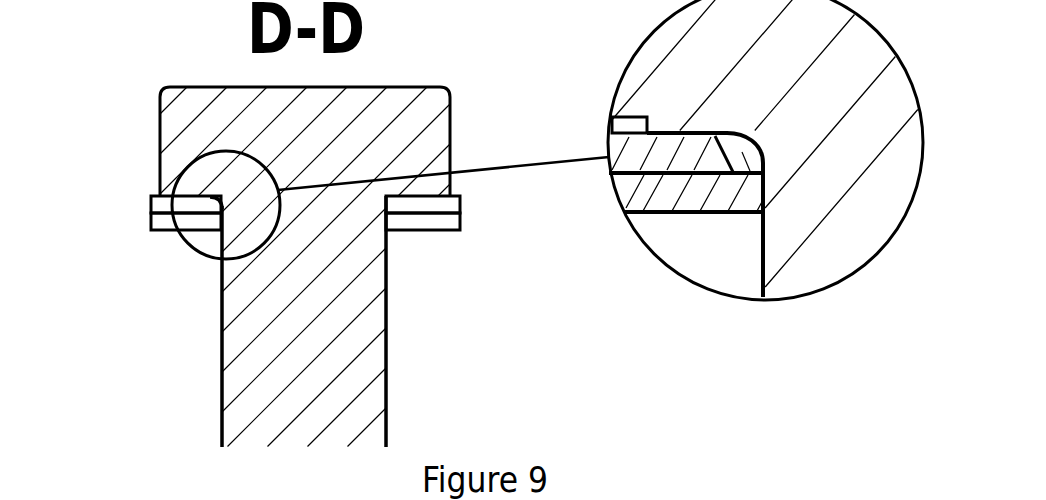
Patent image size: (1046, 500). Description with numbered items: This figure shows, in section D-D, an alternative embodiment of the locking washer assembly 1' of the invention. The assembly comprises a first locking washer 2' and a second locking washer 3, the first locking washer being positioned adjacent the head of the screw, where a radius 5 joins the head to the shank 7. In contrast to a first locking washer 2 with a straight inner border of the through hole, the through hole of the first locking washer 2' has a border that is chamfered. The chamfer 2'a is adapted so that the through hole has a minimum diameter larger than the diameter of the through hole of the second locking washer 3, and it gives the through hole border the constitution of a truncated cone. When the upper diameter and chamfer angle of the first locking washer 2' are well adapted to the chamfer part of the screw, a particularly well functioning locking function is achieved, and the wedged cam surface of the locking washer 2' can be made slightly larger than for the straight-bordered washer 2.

The locking washer assembly 1' is at (88, 173).
The first locking washer 2 is at (268, 227).
The second locking washer 3 is at (202, 223).
The radius 5 is at (215, 198).
The shank 7 is at (293, 323).
The chamfer 2'a is at (578, 126).
The first locking washer 2' is at (616, 231).